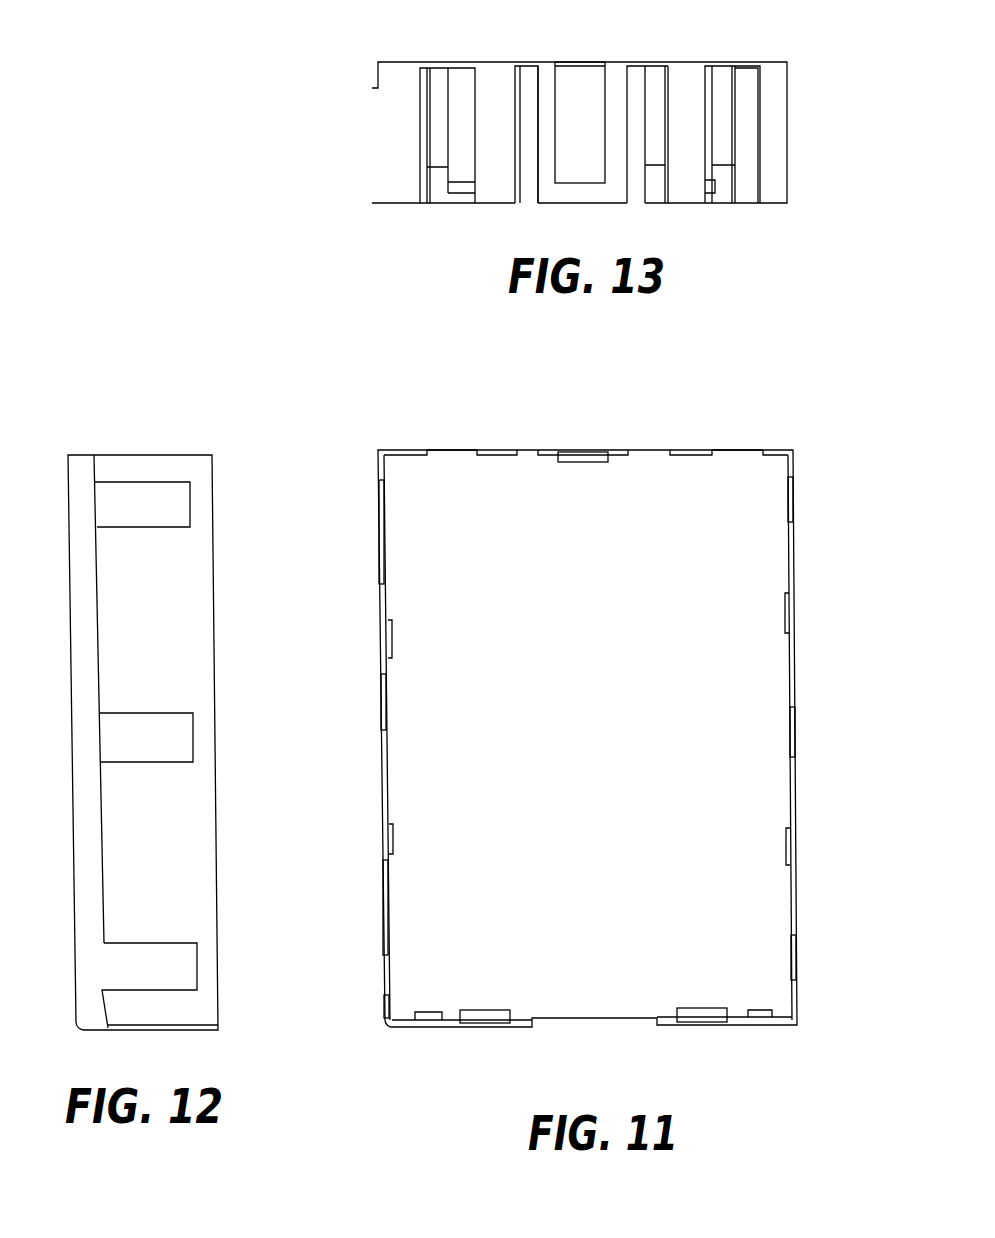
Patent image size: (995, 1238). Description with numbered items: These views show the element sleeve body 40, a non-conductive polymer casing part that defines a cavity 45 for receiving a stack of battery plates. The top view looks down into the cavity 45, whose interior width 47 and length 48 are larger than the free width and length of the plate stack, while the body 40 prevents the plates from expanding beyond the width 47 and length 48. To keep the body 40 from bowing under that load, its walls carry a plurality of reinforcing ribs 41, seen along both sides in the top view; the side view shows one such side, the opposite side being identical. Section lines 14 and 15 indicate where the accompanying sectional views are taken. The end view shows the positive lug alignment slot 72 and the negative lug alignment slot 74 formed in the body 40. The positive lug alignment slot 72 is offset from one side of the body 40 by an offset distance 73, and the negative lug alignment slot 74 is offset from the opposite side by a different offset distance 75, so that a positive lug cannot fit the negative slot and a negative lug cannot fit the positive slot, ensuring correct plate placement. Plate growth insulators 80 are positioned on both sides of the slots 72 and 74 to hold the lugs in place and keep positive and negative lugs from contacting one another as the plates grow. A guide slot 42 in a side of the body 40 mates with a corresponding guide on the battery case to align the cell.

In FIG. 11, the section line 14- 14 is at (797, 987).
In FIG. 11, the section line 15- 15 is at (573, 428).
In FIG. 12, the element sleeve body 40 is at (172, 616).
In FIG. 11, the element sleeve body 40 is at (746, 556).
In FIG. 11, the reinforcing ribs 41 is at (392, 615).
In FIG. 13, the slot 42 is at (375, 75).
In FIG. 11, the cavity 45 is at (604, 744).
In FIG. 11, the width 47 is at (648, 483).
In FIG. 11, the length 48 is at (426, 650).
In FIG. 13, the positive lug alignment slot 72 is at (723, 150).
In FIG. 11, the positive lug alignment slot 72 is at (731, 453).
In FIG. 13, the offset distance 73 is at (787, 152).
In FIG. 11, the offset distance 73 is at (793, 435).
In FIG. 13, the negative lug alignment slot 74 is at (462, 172).
In FIG. 11, the negative lug alignment slot 74 is at (450, 455).
In FIG. 13, the offset distance 75 is at (420, 153).
In FIG. 11, the offset distance 75 is at (427, 438).
In FIG. 13, the plate growth insulators 80 is at (399, 76).
In FIG. 11, the plate growth insulators 80 is at (404, 455).